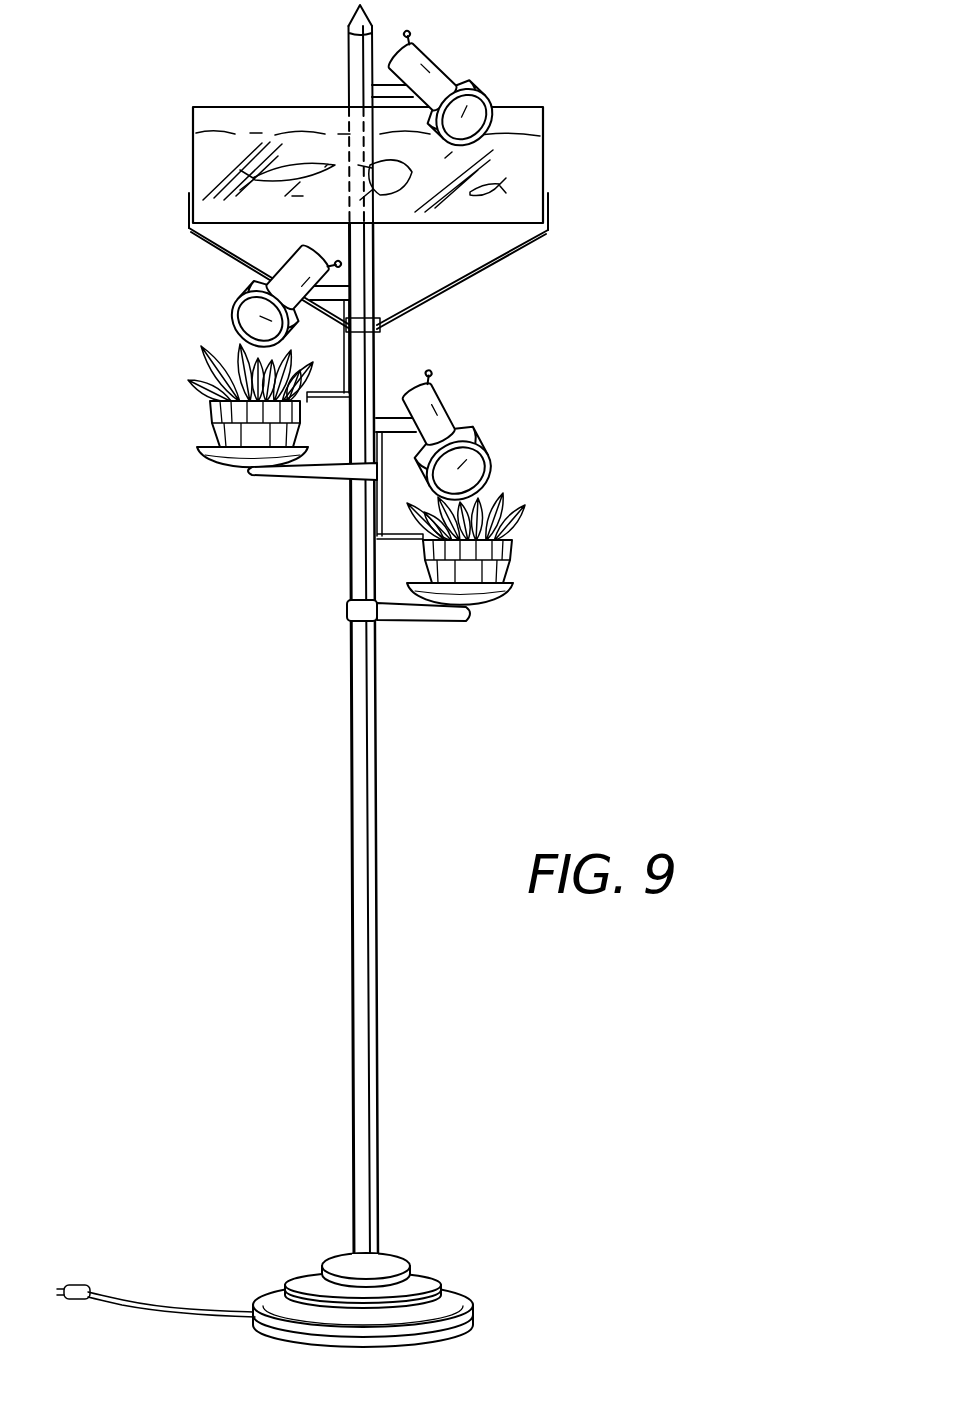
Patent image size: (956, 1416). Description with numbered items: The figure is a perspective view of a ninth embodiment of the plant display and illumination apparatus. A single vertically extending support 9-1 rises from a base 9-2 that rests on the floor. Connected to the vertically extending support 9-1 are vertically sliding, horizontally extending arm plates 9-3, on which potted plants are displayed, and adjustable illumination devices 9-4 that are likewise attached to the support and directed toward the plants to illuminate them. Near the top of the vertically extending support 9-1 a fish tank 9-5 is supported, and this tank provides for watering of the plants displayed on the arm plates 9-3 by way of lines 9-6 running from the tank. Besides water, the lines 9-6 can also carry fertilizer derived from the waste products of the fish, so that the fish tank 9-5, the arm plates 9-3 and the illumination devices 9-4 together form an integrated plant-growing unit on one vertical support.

The vertically extending support 9-1 is at (352, 1030).
The base 9-2 is at (318, 1275).
The arm plates 9-3 is at (232, 480).
The adjustable illumination devices 9-4 is at (414, 388).
The fish tank 9-5 is at (543, 110).
The lines 9-6 is at (490, 259).